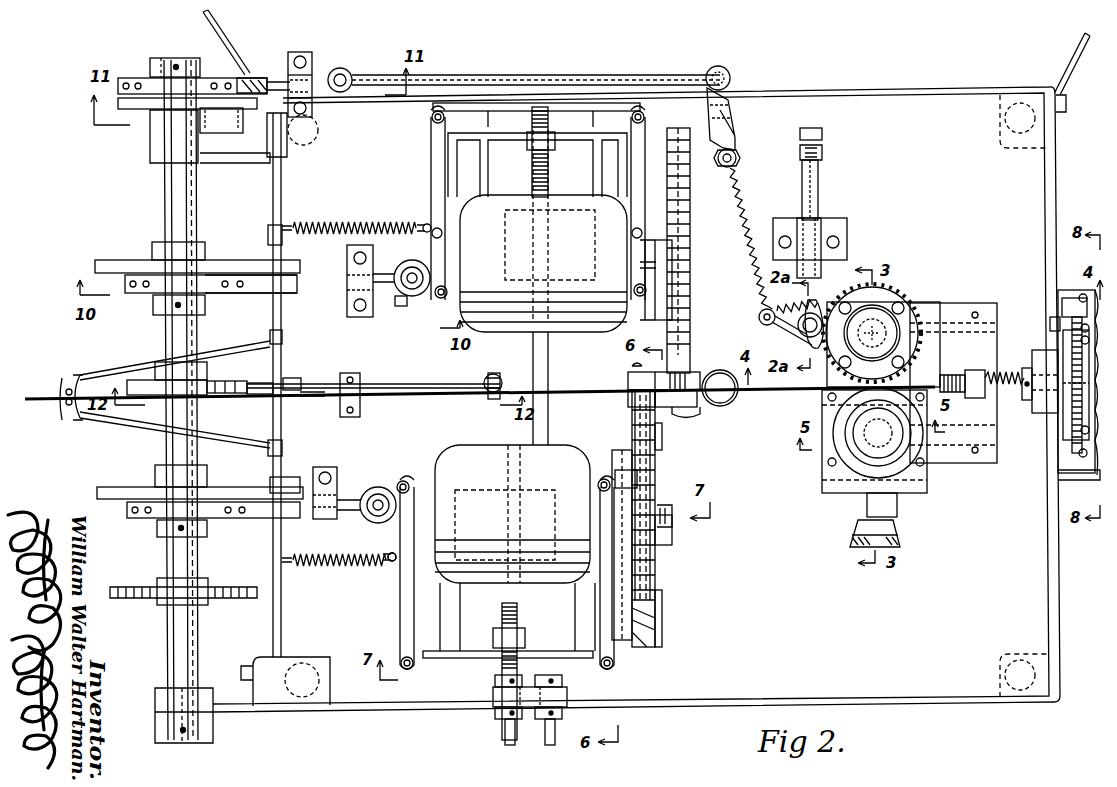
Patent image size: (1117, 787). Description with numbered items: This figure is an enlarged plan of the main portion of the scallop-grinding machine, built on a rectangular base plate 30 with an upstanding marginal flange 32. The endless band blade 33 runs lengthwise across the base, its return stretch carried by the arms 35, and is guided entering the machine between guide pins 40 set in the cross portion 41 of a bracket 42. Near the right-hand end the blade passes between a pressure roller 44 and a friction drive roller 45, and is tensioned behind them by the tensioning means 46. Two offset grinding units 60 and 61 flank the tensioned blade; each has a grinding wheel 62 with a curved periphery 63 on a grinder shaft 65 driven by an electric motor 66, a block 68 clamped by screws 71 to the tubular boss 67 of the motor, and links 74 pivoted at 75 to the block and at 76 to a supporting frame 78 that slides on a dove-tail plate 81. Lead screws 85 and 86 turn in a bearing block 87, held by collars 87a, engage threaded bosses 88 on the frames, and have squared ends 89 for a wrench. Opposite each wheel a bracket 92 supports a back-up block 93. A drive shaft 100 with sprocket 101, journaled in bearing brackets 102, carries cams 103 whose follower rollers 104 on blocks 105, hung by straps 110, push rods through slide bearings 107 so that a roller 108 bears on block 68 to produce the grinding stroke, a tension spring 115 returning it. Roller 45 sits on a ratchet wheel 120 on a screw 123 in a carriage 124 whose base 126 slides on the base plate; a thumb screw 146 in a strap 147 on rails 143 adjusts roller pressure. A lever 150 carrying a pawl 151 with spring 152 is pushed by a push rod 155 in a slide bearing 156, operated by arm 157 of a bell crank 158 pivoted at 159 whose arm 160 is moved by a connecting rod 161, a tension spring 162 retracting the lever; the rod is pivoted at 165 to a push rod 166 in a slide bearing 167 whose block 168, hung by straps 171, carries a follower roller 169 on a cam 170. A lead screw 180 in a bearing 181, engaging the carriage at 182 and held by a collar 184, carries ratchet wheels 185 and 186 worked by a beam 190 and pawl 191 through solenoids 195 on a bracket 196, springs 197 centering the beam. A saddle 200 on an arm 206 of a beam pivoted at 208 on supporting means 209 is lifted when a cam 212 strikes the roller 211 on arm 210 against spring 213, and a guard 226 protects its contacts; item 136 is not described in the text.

The base plate 30 is at (967, 673).
The marginal flange 32 is at (890, 95).
The blade 33 is at (40, 390).
The arms 35 is at (228, 36).
The guide pins 40 is at (70, 380).
The cross portion 41 is at (70, 416).
The bracket 42 is at (114, 382).
The pressure roller 44 is at (838, 425).
The friction drive roller 45 is at (911, 294).
The blade tensioning means 46 is at (368, 396).
The blade grinding unit 60 is at (662, 321).
The blade grinding unit 61 is at (622, 433).
The grinding wheel 62 is at (690, 345).
The grinding periphery 63 is at (665, 635).
The grinder shaft 65 is at (700, 248).
The electric motor 66 is at (567, 197).
The tubular boss 67 is at (442, 298).
The block 68 is at (432, 252).
The screws 71 is at (420, 312).
The links 74 is at (432, 186).
The pivot 75 is at (425, 224).
The pivot 76 is at (437, 110).
The supporting frame 78 is at (567, 111).
The dove-tail supporting plate 81 is at (510, 111).
The lead screw 85 is at (550, 740).
The lead screw 86 is at (495, 704).
The bearing block 87 is at (492, 708).
The collars 87a is at (494, 703).
The tubular bosses 88 is at (530, 158).
The squared ends 89 is at (520, 745).
The bracket 92 is at (630, 368).
The block 93 is at (628, 380).
The drive shaft 100 is at (165, 618).
The sprocket 101 is at (140, 584).
The bearing brackets 102 is at (218, 154).
The cams 103 is at (122, 260).
The follower roller 104 is at (270, 250).
The block 105 is at (290, 282).
The slide bearing 107 is at (346, 254).
The roller 108 is at (406, 296).
The straps 110 is at (212, 280).
The tension spring 115 is at (326, 224).
The ratchet wheel 120 is at (915, 306).
The screw 123 is at (900, 340).
The carriage 124 is at (918, 366).
The base 126 is at (962, 303).
The bearing 136 is at (862, 440).
The rails 143 is at (830, 470).
The thumb screw 146 is at (900, 535).
The strap 147 is at (898, 502).
The lever 150 is at (760, 322).
The pawl 151 is at (800, 345).
The spring 152 is at (783, 324).
The push rod 155 is at (818, 190).
The slide bearing 156 is at (838, 226).
The arm 157 is at (771, 147).
The bell crank 158 is at (743, 122).
The pivot 159 is at (738, 168).
The arm 160 is at (730, 85).
The connecting rod 161 is at (378, 80).
The tension spring 162 is at (763, 288).
The pivotal connection 165 is at (348, 76).
The push rod 166 is at (273, 78).
The slide bearing 167 is at (305, 55).
The block 168 is at (256, 75).
The cam follower roller 169 is at (221, 120).
The cam 170 is at (146, 108).
The straps 171 is at (150, 70).
The lead screw 180 is at (965, 395).
The bearing 181 is at (1038, 350).
The screwthreaded engagement 182 is at (987, 402).
The collar 184 is at (1060, 318).
The ratchet wheel 185 is at (1055, 318).
The ratchet wheel 186 is at (1065, 425).
The beam 190 is at (1072, 300).
The pawl 191 is at (1068, 440).
The solenoids 195 is at (1078, 450).
The supporting bracket 196 is at (1060, 473).
The tension springs 197 is at (1081, 326).
The saddle element 200 is at (485, 396).
The arm 206 is at (441, 381).
The pivot 208 is at (288, 395).
The supporting means 209 is at (292, 378).
The arm 210 is at (240, 395).
The roller 211 is at (240, 368).
The cam 212 is at (144, 378).
The spring 213 is at (261, 404).
The guard 226 is at (505, 378).